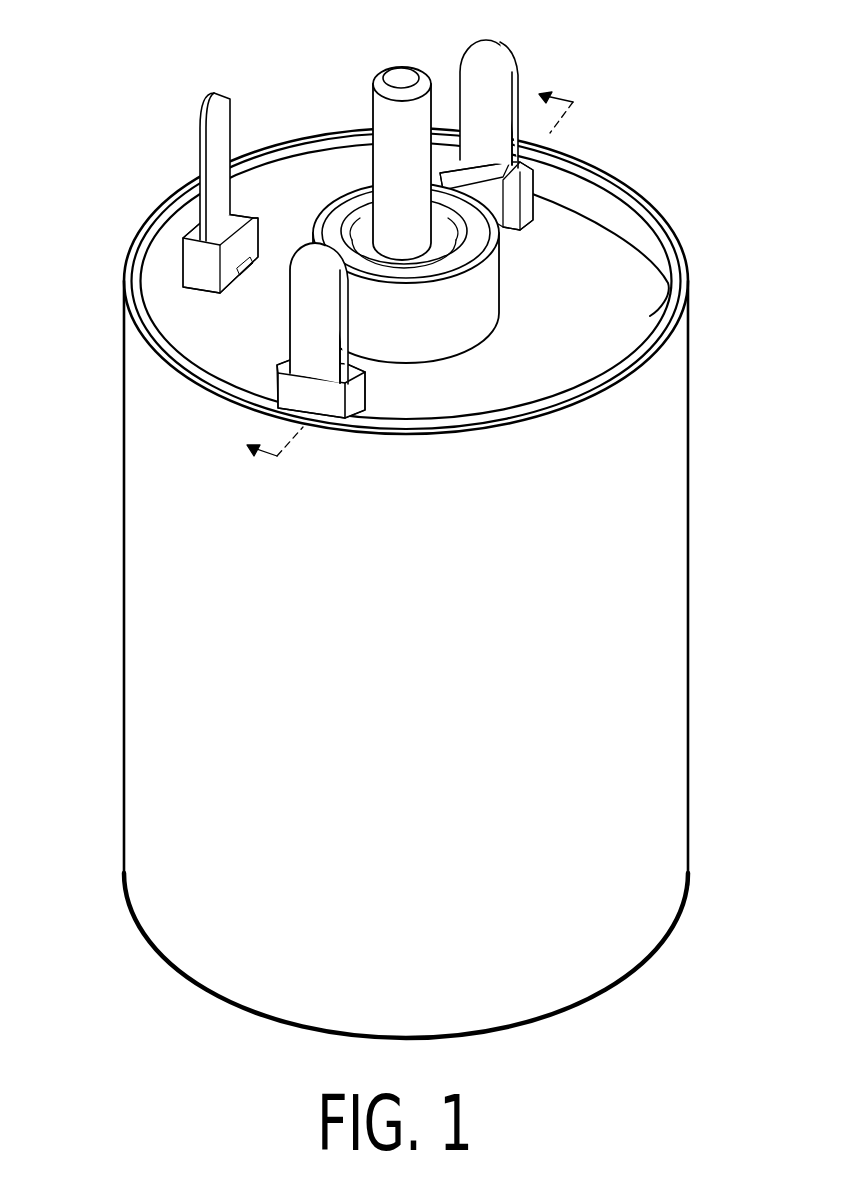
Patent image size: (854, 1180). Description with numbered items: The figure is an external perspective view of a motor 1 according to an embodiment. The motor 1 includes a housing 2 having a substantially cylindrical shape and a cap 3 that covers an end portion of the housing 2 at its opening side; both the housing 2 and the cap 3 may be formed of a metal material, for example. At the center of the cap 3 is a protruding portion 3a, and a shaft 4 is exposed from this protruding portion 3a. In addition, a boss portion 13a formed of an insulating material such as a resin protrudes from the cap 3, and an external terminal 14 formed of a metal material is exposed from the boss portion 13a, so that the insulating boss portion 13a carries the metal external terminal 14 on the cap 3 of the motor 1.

The motor 1 is at (396, 521).
The housing 2 is at (610, 590).
The cap 3 is at (440, 237).
The protruding portion 3a is at (458, 310).
The shaft 4 is at (403, 72).
The boss portion 13a is at (305, 392).
The external terminal 14 is at (313, 322).